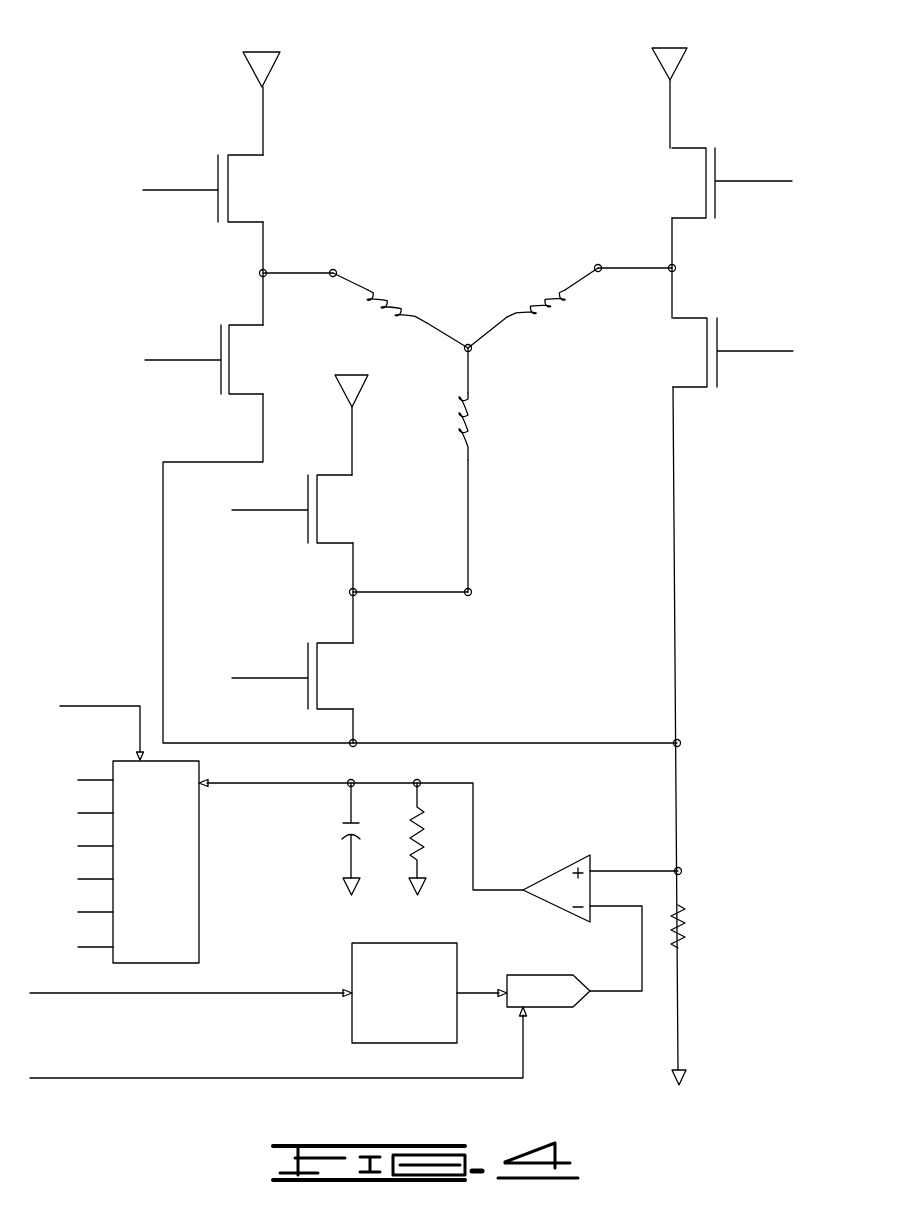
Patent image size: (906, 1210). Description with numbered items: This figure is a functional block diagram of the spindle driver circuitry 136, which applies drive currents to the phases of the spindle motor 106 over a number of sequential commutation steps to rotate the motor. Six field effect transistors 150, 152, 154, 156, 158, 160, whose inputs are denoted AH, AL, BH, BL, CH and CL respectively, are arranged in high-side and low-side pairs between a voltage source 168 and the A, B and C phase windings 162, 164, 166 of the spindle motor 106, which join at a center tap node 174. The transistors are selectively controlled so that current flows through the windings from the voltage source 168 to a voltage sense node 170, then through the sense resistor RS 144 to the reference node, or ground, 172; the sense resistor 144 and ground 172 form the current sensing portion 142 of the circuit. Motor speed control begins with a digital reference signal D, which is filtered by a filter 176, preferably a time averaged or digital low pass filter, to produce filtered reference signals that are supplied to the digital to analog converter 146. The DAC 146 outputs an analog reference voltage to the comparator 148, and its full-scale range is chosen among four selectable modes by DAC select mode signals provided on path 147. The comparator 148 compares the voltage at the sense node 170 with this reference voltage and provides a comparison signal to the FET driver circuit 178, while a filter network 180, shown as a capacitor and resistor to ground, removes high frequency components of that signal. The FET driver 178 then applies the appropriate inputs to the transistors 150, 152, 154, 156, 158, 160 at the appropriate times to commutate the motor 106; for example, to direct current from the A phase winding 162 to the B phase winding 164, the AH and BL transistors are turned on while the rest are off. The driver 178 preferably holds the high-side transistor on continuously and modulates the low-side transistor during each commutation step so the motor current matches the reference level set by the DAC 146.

The spindle driver circuitry 136 is at (200, 52).
The voltage source 168 is at (259, 50).
The field effect transistor (AH) 150 is at (218, 168).
The field effect transistor (AL) 152 is at (221, 340).
The field effect transistor (BH) 154 is at (715, 170).
The field effect transistor (BL) 156 is at (718, 368).
The field effect transistor (CH) 158 is at (307, 530).
The field effect transistor (CL) 160 is at (307, 705).
The spindle motor 106 is at (454, 411).
The A phase winding 162 is at (380, 305).
The B phase winding 164 is at (537, 325).
The C phase winding 166 is at (475, 455).
The center tap node 174 is at (452, 357).
The voltage sense node 170 is at (667, 718).
The FET driver circuit 178 is at (199, 897).
The filter network 180 is at (439, 890).
The comparator 148 is at (558, 872).
The filter 176 is at (405, 943).
The digital to analog converter (DAC) 146 is at (548, 1010).
The path 147 is at (318, 1082).
The current sense circuit 142 is at (766, 987).
The sense resistor RS 144 is at (685, 950).
The reference node (ground) 172 is at (688, 1078).